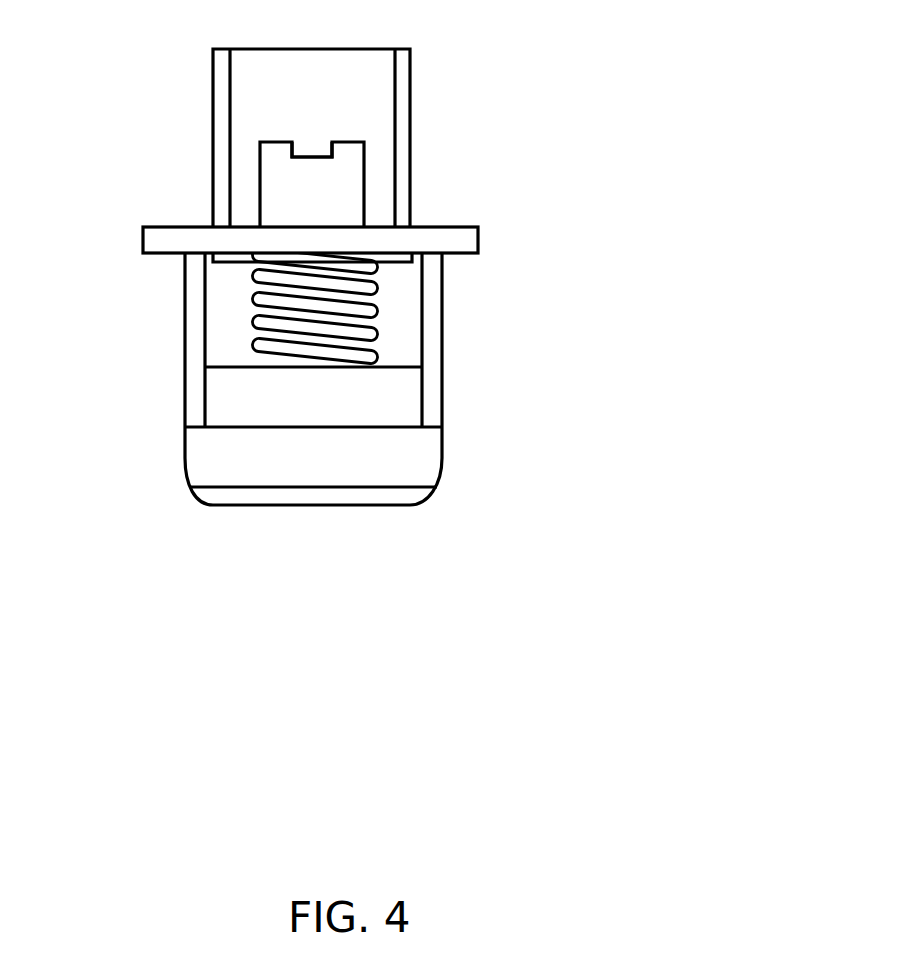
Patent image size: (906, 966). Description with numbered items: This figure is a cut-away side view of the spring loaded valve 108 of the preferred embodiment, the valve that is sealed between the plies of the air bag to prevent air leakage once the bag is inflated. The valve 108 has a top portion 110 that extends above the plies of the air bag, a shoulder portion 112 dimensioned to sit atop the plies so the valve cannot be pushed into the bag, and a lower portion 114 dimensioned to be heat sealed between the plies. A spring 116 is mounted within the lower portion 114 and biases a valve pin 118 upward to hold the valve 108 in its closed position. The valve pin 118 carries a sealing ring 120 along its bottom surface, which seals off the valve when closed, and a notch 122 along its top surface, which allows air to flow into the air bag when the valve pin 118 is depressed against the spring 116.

The spring loaded valve 108 is at (598, 167).
The top portion 110 is at (403, 118).
The shoulder portion 112 is at (480, 236).
The lower portion 114 is at (433, 405).
The spring 116 is at (252, 305).
The valve pin 118 is at (272, 187).
The sealing ring 120 is at (238, 263).
The notch 122 is at (313, 152).